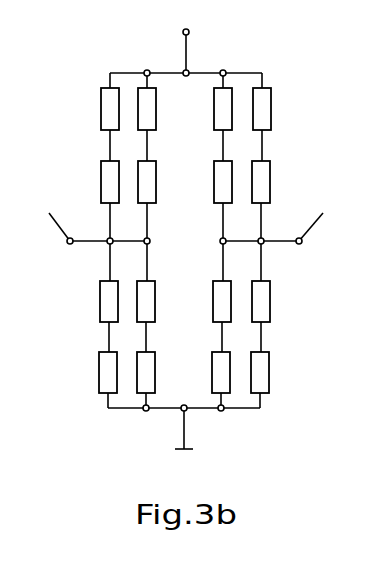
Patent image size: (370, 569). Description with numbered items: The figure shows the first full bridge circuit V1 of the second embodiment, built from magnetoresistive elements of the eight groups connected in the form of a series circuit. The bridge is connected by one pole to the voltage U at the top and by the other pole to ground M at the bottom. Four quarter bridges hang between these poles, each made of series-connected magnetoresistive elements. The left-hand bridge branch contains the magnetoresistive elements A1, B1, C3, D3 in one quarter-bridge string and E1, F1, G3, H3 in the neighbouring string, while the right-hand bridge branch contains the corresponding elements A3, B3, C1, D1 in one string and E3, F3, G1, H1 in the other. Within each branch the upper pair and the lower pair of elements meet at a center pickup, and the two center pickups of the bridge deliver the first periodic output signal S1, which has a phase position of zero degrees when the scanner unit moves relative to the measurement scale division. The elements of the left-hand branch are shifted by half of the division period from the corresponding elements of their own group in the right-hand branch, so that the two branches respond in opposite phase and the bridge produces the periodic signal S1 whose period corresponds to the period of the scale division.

The first full bridge circuit V1 is at (281, 76).
The voltage U is at (182, 31).
The ground M is at (175, 449).
The first periodic output signal S1 is at (186, 217).
The magnetoresistive element A1 is at (110, 109).
The magnetoresistive element E1 is at (147, 109).
The magnetoresistive element A3 is at (223, 109).
The magnetoresistive element E3 is at (262, 109).
The magnetoresistive element B1 is at (110, 182).
The magnetoresistive element F1 is at (147, 182).
The magnetoresistive element B3 is at (223, 182).
The magnetoresistive element F3 is at (261, 182).
The magnetoresistive element C3 is at (109, 301).
The magnetoresistive element G3 is at (146, 301).
The magnetoresistive element C1 is at (222, 301).
The magnetoresistive element G1 is at (261, 301).
The magnetoresistive element D3 is at (108, 372).
The magnetoresistive element H3 is at (146, 372).
The magnetoresistive element D1 is at (221, 372).
The magnetoresistive element H1 is at (260, 372).